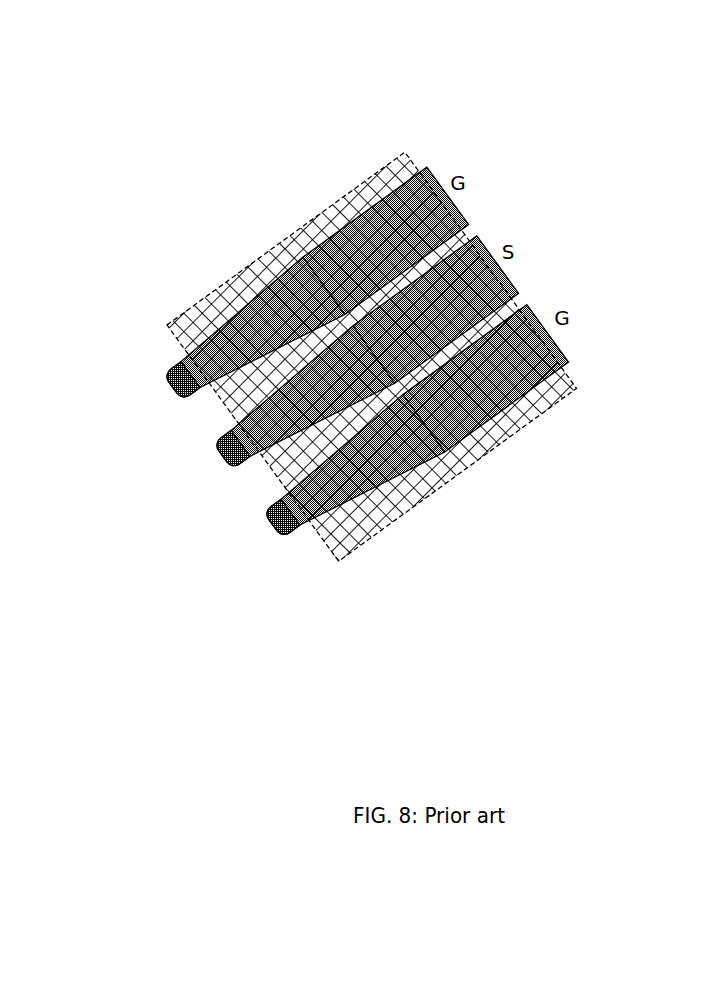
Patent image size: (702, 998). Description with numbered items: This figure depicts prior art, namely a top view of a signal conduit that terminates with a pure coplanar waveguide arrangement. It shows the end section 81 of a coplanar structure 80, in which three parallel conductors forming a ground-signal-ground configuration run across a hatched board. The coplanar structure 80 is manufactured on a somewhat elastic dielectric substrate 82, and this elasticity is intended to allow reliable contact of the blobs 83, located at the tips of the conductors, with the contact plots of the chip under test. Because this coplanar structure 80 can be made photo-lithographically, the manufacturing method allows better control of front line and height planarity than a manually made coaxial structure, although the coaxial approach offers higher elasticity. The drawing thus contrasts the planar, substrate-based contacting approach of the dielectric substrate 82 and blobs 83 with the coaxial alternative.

The coplanar structure 80 is at (387, 192).
The end section 81 is at (306, 295).
The elastic dielectric substrate 82 is at (306, 358).
The blobs 83 is at (192, 392).